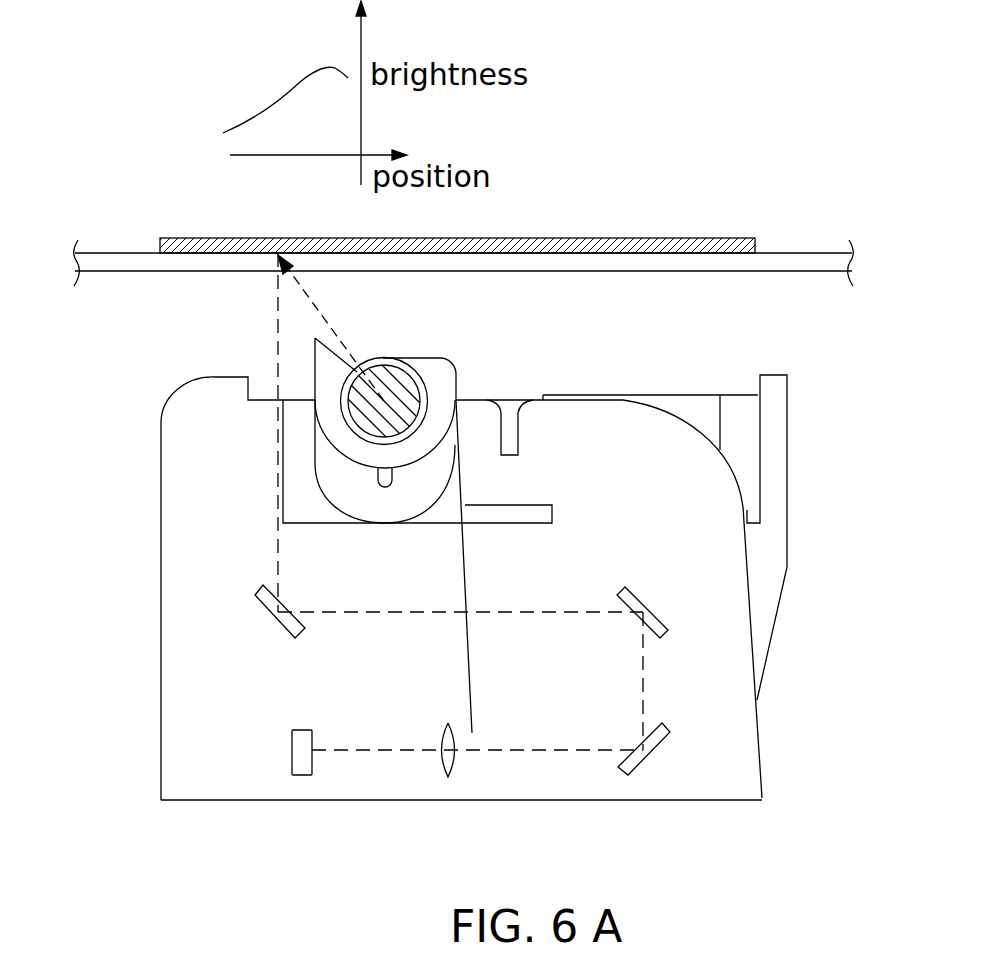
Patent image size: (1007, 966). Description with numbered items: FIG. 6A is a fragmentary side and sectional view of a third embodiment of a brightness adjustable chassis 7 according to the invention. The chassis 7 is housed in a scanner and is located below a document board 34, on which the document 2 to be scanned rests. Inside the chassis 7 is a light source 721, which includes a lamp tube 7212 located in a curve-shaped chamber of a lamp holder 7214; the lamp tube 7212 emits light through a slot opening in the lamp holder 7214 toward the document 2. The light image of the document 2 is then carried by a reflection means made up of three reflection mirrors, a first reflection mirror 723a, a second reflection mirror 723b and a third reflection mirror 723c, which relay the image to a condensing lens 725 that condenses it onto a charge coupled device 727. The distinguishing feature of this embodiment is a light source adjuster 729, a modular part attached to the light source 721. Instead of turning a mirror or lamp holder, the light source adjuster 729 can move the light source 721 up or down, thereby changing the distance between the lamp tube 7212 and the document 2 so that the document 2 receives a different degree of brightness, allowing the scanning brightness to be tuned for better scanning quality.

The document 2 is at (596, 212).
The document board 34 is at (787, 262).
The chassis 7 is at (822, 466).
The light source 721 is at (447, 380).
The lamp tube 7212 is at (391, 368).
The lamp holder 7214 is at (440, 358).
The light source adjuster 729 is at (415, 500).
The first reflection mirror 723a is at (255, 597).
The second reflection mirror 723b is at (668, 628).
The third reflection mirror 723c is at (640, 762).
The condensing lens 725 is at (447, 778).
The charge coupled device 727 is at (300, 776).